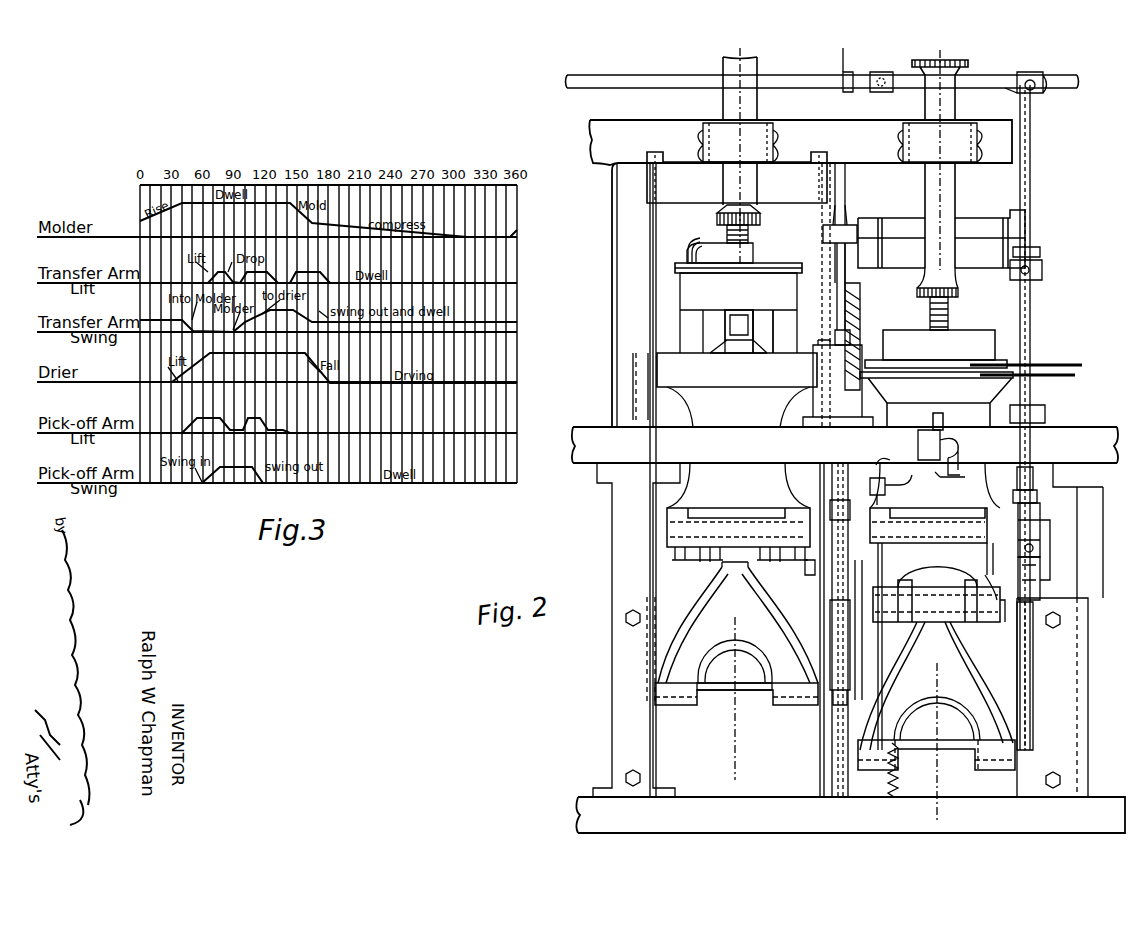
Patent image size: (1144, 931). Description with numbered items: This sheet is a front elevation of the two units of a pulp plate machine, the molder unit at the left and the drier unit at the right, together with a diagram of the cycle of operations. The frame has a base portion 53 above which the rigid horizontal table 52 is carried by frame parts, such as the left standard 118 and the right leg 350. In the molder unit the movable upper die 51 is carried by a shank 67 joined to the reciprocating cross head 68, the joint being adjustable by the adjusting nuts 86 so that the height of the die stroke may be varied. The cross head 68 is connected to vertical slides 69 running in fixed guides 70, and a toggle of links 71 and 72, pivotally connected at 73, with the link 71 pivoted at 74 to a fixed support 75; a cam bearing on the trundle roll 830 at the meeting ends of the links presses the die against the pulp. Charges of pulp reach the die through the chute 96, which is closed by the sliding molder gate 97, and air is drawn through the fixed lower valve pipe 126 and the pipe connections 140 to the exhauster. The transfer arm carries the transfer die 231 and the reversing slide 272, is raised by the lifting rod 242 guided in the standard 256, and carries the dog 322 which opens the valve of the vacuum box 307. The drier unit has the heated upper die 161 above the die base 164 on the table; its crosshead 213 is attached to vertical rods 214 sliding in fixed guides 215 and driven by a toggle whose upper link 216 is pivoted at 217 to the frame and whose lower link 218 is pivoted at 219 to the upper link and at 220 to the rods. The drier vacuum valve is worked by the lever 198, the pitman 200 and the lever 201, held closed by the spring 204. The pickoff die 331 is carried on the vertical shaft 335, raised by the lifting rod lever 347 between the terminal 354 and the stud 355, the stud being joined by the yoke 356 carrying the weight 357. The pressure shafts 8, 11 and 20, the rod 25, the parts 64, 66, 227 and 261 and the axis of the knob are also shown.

The molder press shaft 8 is at (741, 773).
The transfer shaft 11 is at (902, 823).
The drier press shaft 20 is at (943, 819).
The pick-off arm rod 25 is at (1065, 344).
The pipe connections 140 is at (655, 80).
The cross head 68 is at (657, 182).
The adjusting nuts 86 is at (763, 212).
The shank portion 67 is at (745, 253).
The lower valve pipe 126 is at (670, 248).
The movable die 51 is at (692, 303).
The molder gate 97 is at (740, 318).
The chutes 96 is at (757, 325).
The reversing slide 272 is at (835, 340).
The mold bed 64 is at (677, 372).
The vacuum box 307 is at (845, 208).
The oscillating rod or dog 322 is at (846, 260).
The transfer die 231 is at (858, 323).
The standard or bracket 256 is at (830, 395).
The crosshead 213 is at (977, 250).
The drier nut 66 is at (1000, 300).
The movable upper drier die 161 is at (957, 340).
The die base 164 is at (1005, 384).
The pickoff die 331 is at (1078, 372).
The table 52 is at (1102, 453).
The base portion 53 is at (598, 815).
The left standard 118 is at (615, 557).
The fixed support 75 is at (687, 493).
The vertical slides 69 is at (820, 577).
The pivot 74 is at (668, 532).
The pivotal connection 73 is at (670, 555).
The toggle link 71 is at (673, 576).
The toggle link 72 is at (692, 628).
The trundle roll 830 is at (754, 636).
The fixed guides 70 is at (827, 723).
The lifting rod 242 is at (810, 569).
The bracket 261 is at (833, 510).
The fixed vertical guides 215 is at (852, 673).
The vertical rods 214 is at (856, 572).
The lever 198 is at (915, 477).
The pitman 200 is at (877, 487).
The pivot 217 is at (895, 525).
The bearing block 227 is at (960, 577).
The upper link 216 is at (990, 575).
The lever 201 is at (893, 640).
The lower link 218 is at (963, 680).
The pivot 219 is at (990, 622).
The pivot 220 is at (955, 758).
The spring 204 is at (898, 780).
The vertical shaft 335 is at (1028, 480).
The lifting rod terminal 354 is at (1037, 535).
The lifting rod lever 347 is at (1035, 550).
The yoke 356 is at (1050, 553).
The stud 355 is at (1032, 572).
The leg 350 is at (1070, 580).
The weight 357 is at (1033, 670).